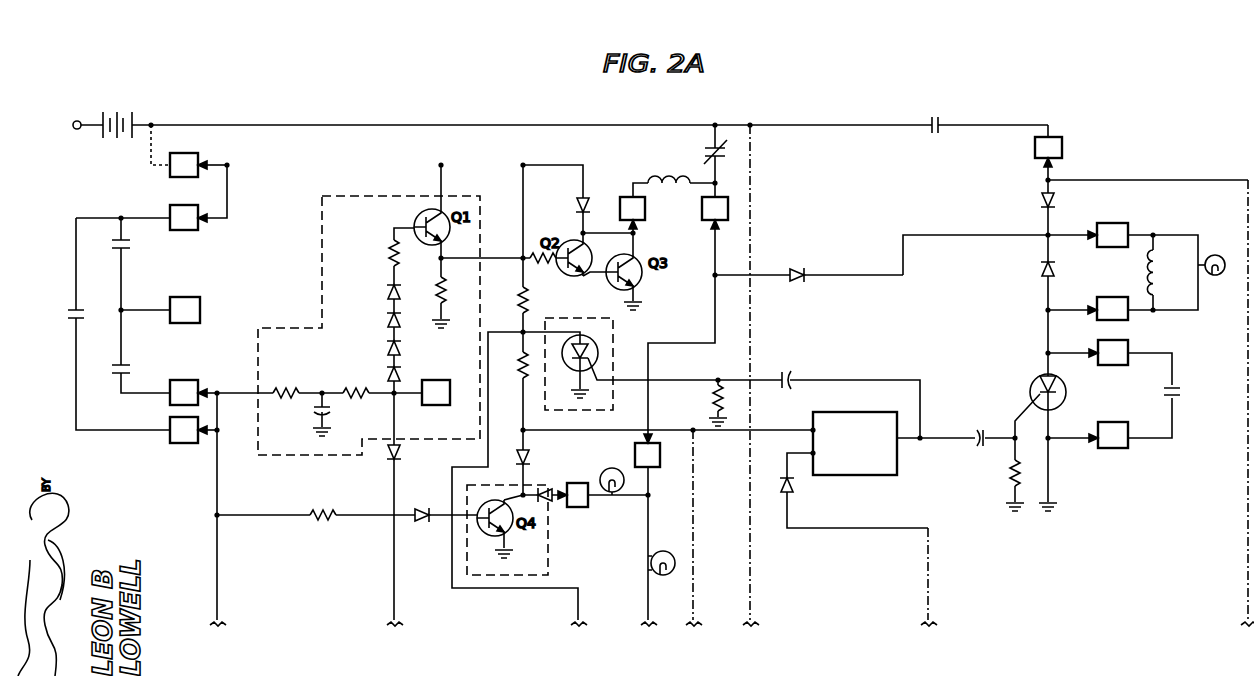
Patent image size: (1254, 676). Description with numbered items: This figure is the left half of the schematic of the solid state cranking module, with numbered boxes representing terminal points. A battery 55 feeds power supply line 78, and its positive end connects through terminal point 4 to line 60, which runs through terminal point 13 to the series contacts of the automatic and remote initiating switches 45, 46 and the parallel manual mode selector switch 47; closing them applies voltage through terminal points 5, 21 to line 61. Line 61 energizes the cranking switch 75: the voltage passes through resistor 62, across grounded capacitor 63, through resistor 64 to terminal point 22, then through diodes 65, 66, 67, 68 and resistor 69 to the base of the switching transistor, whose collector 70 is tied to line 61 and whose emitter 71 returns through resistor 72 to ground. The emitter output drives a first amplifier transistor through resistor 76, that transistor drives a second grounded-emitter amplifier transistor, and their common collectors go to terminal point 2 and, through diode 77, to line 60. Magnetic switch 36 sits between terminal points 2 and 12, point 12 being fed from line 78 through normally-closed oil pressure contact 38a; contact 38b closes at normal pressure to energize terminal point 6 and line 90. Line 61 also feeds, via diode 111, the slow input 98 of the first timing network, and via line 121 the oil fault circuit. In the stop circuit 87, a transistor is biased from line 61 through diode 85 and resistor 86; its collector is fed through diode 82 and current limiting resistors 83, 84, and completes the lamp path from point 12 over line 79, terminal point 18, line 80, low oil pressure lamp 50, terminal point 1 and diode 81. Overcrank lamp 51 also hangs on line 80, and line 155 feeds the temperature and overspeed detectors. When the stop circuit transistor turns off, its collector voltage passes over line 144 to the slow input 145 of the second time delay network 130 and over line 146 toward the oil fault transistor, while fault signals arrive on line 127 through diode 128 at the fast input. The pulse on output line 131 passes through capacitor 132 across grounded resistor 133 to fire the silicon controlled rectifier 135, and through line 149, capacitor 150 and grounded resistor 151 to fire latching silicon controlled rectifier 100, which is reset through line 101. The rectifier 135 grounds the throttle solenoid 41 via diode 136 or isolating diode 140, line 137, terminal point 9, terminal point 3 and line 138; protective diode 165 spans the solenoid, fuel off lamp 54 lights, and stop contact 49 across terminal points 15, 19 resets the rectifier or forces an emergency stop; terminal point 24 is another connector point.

The battery 55 is at (121, 112).
The power supply line 78 is at (428, 123).
The normally-closed contact 38a is at (704, 150).
The normally-open contact 38b is at (930, 122).
The terminal point 4 is at (198, 165).
The line 60 is at (229, 205).
The terminal point 13 is at (137, 217).
The automatic initiating switch 45 is at (127, 245).
The mode selector switch 47 is at (67, 314).
The terminal point 24 is at (159, 310).
The remote initiating switch 46 is at (131, 370).
The terminal point 21 is at (193, 392).
The terminal point 5 is at (193, 430).
The line 61 is at (220, 421).
The line 121 is at (218, 607).
The cranking switch 75 is at (328, 274).
The resistor 62 is at (287, 389).
The capacitor 63 is at (313, 411).
The resistor 64 is at (357, 399).
The terminal point 22 is at (436, 392).
The collector 70 is at (440, 181).
The resistor 69 is at (388, 251).
The diode 68 is at (385, 294).
The diode 67 is at (385, 322).
The diode 66 is at (385, 349).
The diode 65 is at (385, 376).
The emitter 71 is at (444, 258).
The resistor 72 is at (445, 284).
The diode 111 is at (401, 455).
The slow input 98 is at (392, 606).
The resistor 86 is at (324, 512).
The diode 85 is at (423, 512).
The stop circuit 87 is at (540, 553).
The line 101 is at (489, 423).
The resistor 76 is at (541, 268).
The current limiting resistor 84 is at (517, 299).
The current limiting resistor 83 is at (520, 364).
The diode 82 is at (530, 456).
The diode 81 is at (545, 489).
The terminal point 1 is at (607, 495).
The low oil pressure indicator lamp 50 is at (612, 494).
The diode 77 is at (578, 203).
The terminal point 2 is at (632, 225).
The magnetic switch 36 is at (672, 181).
The terminal point 12 is at (715, 229).
The line 79 is at (664, 343).
The line 155 is at (753, 613).
The latching silicon controlled rectifier 100 is at (592, 336).
The resistor 151 is at (713, 399).
The capacitor 150 is at (786, 378).
The line 149 is at (880, 380).
The line 144 is at (611, 433).
The terminal point 18 is at (647, 450).
The line 80 is at (649, 480).
The overcrank warning lamp 51 is at (662, 551).
The line 146 is at (696, 613).
The slow input 145 is at (777, 430).
The second time delay network 130 is at (826, 412).
The output line 131 is at (905, 442).
The diode 128 is at (791, 492).
The line 127 is at (930, 572).
The capacitor 132 is at (978, 431).
The resistor 133 is at (1011, 484).
The silicon controlled rectifier 135 is at (1030, 390).
The line 138 is at (1046, 329).
The terminal point 15 is at (1088, 352).
The terminal point 19 is at (1083, 466).
The stop contact 49 is at (1162, 393).
The terminal point 6 is at (1048, 154).
The line 90 is at (1158, 180).
The isolating diode 140 is at (1040, 203).
The diode 136 is at (800, 271).
The line 137 is at (1064, 233).
The terminal point 9 is at (1112, 235).
The protective diode 165 is at (1040, 272).
The terminal point 3 is at (1086, 308).
The throttle solenoid 41 is at (1147, 272).
The fuel off lamp 54 is at (1216, 276).